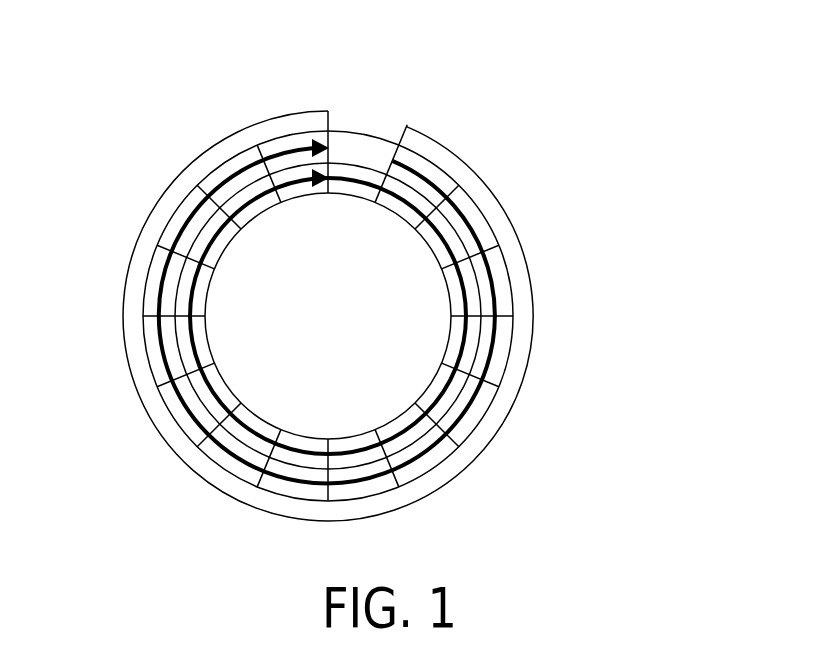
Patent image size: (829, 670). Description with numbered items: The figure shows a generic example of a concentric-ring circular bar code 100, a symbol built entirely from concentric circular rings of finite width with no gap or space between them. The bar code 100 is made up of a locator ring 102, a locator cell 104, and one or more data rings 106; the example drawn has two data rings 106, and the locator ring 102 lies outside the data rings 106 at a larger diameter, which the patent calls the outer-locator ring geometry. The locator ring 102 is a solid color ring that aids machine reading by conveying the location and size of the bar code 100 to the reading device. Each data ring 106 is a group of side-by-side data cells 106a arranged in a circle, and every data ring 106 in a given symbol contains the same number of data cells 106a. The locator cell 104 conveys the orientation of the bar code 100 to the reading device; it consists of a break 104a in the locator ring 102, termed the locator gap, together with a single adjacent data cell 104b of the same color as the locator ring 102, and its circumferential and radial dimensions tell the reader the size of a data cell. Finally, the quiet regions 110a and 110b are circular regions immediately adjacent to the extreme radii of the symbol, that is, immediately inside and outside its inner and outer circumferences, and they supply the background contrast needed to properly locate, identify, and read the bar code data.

The concentric-ring circular bar code 100 is at (156, 154).
The locator ring 102 is at (457, 168).
The locator cell 104 is at (362, 130).
The break in the locator ring 104a is at (347, 118).
The adjacent data cell 104b is at (372, 145).
The data ring 106 is at (463, 310).
The data cell 106a is at (500, 363).
The quiet region 110a is at (417, 385).
The quiet region 110b is at (497, 447).